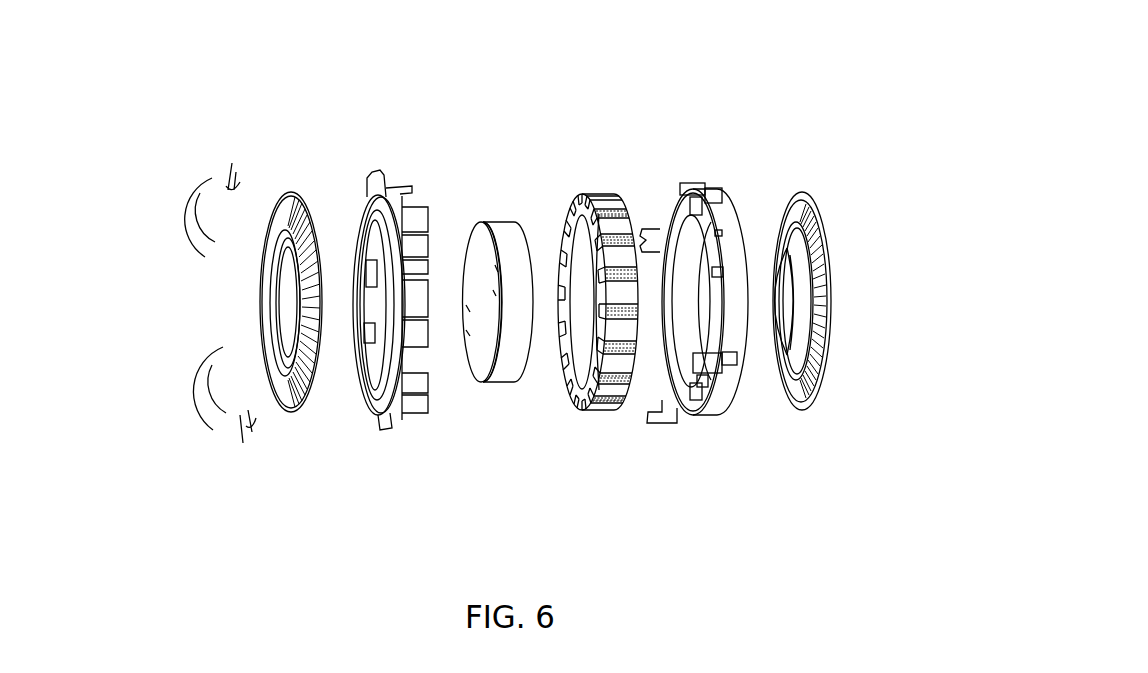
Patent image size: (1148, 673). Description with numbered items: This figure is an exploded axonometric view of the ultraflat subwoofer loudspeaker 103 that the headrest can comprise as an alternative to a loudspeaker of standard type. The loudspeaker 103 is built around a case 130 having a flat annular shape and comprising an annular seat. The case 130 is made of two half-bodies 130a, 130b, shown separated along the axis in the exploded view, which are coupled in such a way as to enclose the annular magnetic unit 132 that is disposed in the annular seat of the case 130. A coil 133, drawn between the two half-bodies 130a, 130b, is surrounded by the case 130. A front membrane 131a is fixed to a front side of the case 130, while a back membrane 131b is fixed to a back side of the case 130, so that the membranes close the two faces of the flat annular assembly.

The subwoofer loudspeaker 103 is at (173, 168).
The case 130 is at (701, 422).
The half-body 130a is at (398, 431).
The half-body 130b is at (725, 418).
The front membrane 131a is at (305, 193).
The back membrane 131b is at (815, 198).
The annular magnetic unit 132 is at (607, 185).
The coil 133 is at (503, 217).